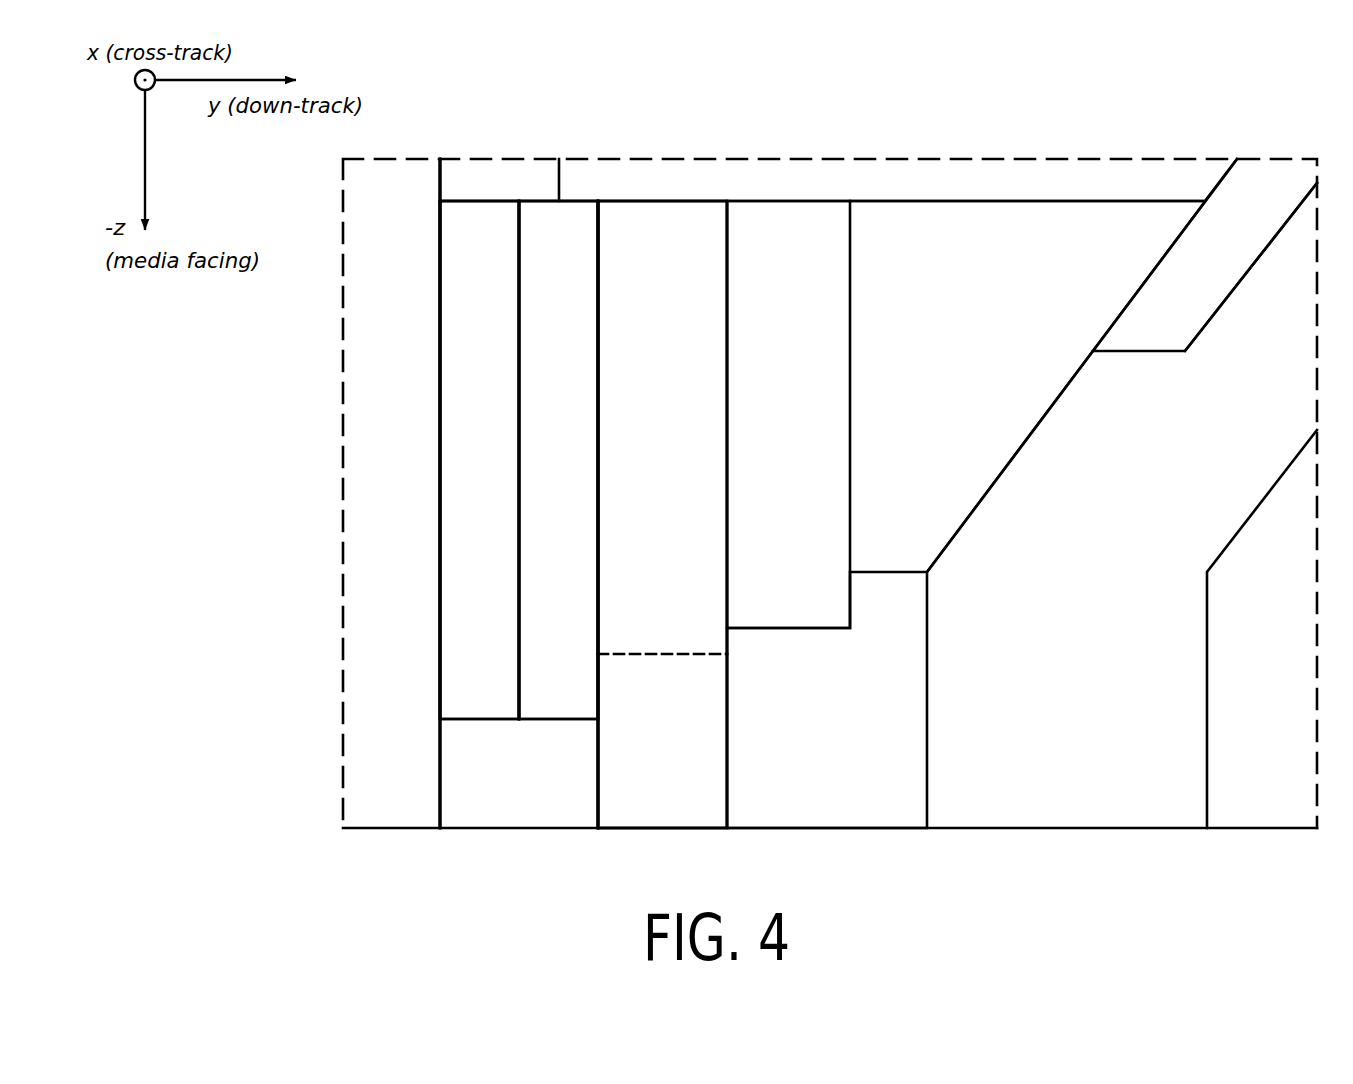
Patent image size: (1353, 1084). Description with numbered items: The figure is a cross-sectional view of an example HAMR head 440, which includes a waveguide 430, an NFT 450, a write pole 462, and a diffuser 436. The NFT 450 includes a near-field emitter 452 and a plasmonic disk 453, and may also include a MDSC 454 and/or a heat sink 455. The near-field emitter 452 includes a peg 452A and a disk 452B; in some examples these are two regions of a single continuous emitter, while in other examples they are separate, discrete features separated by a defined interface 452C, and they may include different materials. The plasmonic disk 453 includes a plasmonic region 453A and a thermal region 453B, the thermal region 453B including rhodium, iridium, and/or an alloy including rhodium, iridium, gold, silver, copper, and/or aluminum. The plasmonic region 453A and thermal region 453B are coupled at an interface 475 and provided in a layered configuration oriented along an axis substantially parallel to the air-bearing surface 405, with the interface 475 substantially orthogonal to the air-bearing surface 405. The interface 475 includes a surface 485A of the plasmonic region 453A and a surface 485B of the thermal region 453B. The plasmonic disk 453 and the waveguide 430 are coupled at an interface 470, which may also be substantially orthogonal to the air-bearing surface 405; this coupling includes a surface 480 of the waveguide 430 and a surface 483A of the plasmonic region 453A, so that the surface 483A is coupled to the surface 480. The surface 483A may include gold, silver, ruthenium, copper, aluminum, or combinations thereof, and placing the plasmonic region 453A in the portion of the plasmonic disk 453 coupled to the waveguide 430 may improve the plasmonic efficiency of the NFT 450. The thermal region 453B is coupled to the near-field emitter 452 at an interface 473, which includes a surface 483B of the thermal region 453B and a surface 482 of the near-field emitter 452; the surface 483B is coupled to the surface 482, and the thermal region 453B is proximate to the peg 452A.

The air-bearing surface 405 is at (347, 828).
The waveguide 430 is at (413, 506).
The diffuser 436 is at (1213, 292).
The HAMR head 440 is at (1170, 140).
The NFT 450 is at (842, 182).
The near-field emitter 452 is at (685, 474).
The peg 452A is at (703, 777).
The disk 452B is at (706, 300).
The interface 452C is at (655, 651).
The plasmonic disk 453 is at (430, 432).
The plasmonic region 453A is at (510, 474).
The thermal region 453B is at (590, 474).
The MDSC 454 is at (807, 429).
The heat sink 455 is at (988, 377).
The write pole 462 is at (1197, 473).
The interface 470 is at (438, 212).
The interface 473 is at (598, 205).
The interface 475 is at (519, 205).
The surface of waveguide 480 is at (436, 648).
The surface of near-field emitter 482 is at (602, 293).
The surface of plasmonic region 483A is at (445, 692).
The surface of thermal region 483B is at (595, 314).
The surface of plasmonic region 485A is at (516, 383).
The surface of thermal region 485B is at (523, 398).